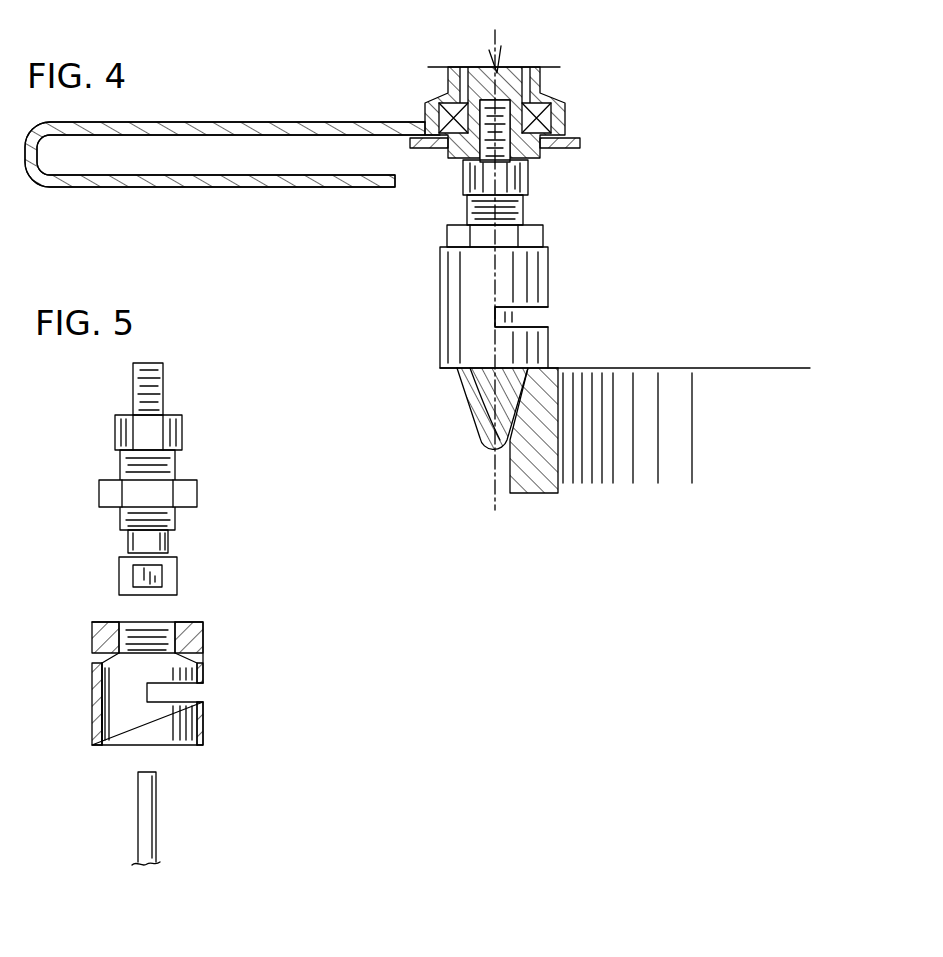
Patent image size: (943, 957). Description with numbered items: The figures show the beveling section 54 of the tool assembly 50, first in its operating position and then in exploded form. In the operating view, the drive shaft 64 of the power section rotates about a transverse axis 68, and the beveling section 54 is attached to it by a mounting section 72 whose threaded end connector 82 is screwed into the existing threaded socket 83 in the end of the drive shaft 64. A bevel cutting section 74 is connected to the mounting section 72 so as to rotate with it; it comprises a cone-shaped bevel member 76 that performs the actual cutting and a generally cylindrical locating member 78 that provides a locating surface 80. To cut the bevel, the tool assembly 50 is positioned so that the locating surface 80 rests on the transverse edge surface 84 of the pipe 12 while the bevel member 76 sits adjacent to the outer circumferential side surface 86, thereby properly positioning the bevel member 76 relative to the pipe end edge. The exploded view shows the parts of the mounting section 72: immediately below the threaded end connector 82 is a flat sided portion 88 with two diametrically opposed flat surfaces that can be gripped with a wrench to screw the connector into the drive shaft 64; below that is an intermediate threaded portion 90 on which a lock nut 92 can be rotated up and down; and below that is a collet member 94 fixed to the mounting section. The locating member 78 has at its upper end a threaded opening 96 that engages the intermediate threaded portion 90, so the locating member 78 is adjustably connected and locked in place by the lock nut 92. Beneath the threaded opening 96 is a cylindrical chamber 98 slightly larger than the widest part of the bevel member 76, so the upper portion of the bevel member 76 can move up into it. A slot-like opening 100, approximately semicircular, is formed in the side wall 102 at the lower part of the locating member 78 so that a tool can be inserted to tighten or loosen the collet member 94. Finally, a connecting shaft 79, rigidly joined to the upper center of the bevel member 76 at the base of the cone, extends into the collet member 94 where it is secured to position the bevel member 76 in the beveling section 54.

In FIG. 4, the pipe 12 is at (678, 388).
In FIG. 4, the tool assembly 50 is at (622, 180).
In FIG. 4, the beveling section 54 is at (587, 271).
In FIG. 5, the beveling section 54 is at (215, 564).
In FIG. 4, the drive shaft 64 is at (508, 80).
In FIG. 4, the transverse axis 68 is at (493, 508).
In FIG. 4, the mounting section 72 is at (530, 188).
In FIG. 5, the mounting section 72 is at (210, 433).
In FIG. 4, the bevel cutting section 74 is at (458, 398).
In FIG. 4, the bevel member 76 is at (481, 417).
In FIG. 4, the locating member 78 is at (455, 305).
In FIG. 5, the locating member 78 is at (100, 648).
In FIG. 5, the connecting shaft 79 is at (140, 812).
In FIG. 4, the locating surface 80 is at (450, 369).
In FIG. 4, the threaded end connector 82 is at (505, 133).
In FIG. 5, the threaded end connector 82 is at (138, 390).
In FIG. 4, the threaded socket 83 is at (490, 107).
In FIG. 4, the transverse edge surface 84 is at (553, 368).
In FIG. 4, the outer circumferential side surface 86 is at (507, 464).
In FIG. 5, the flat sided portion 88 is at (120, 435).
In FIG. 5, the intermediate threaded portion 90 is at (125, 463).
In FIG. 5, the lock nut 92 is at (105, 495).
In FIG. 5, the collet member 94 is at (125, 580).
In FIG. 5, the threaded opening 96 is at (138, 628).
In FIG. 5, the cylindrical chamber 98 is at (102, 718).
In FIG. 4, the slot-like opening 100 is at (521, 317).
In FIG. 5, the slot-like opening 100 is at (178, 688).
In FIG. 5, the side wall 102 is at (96, 693).